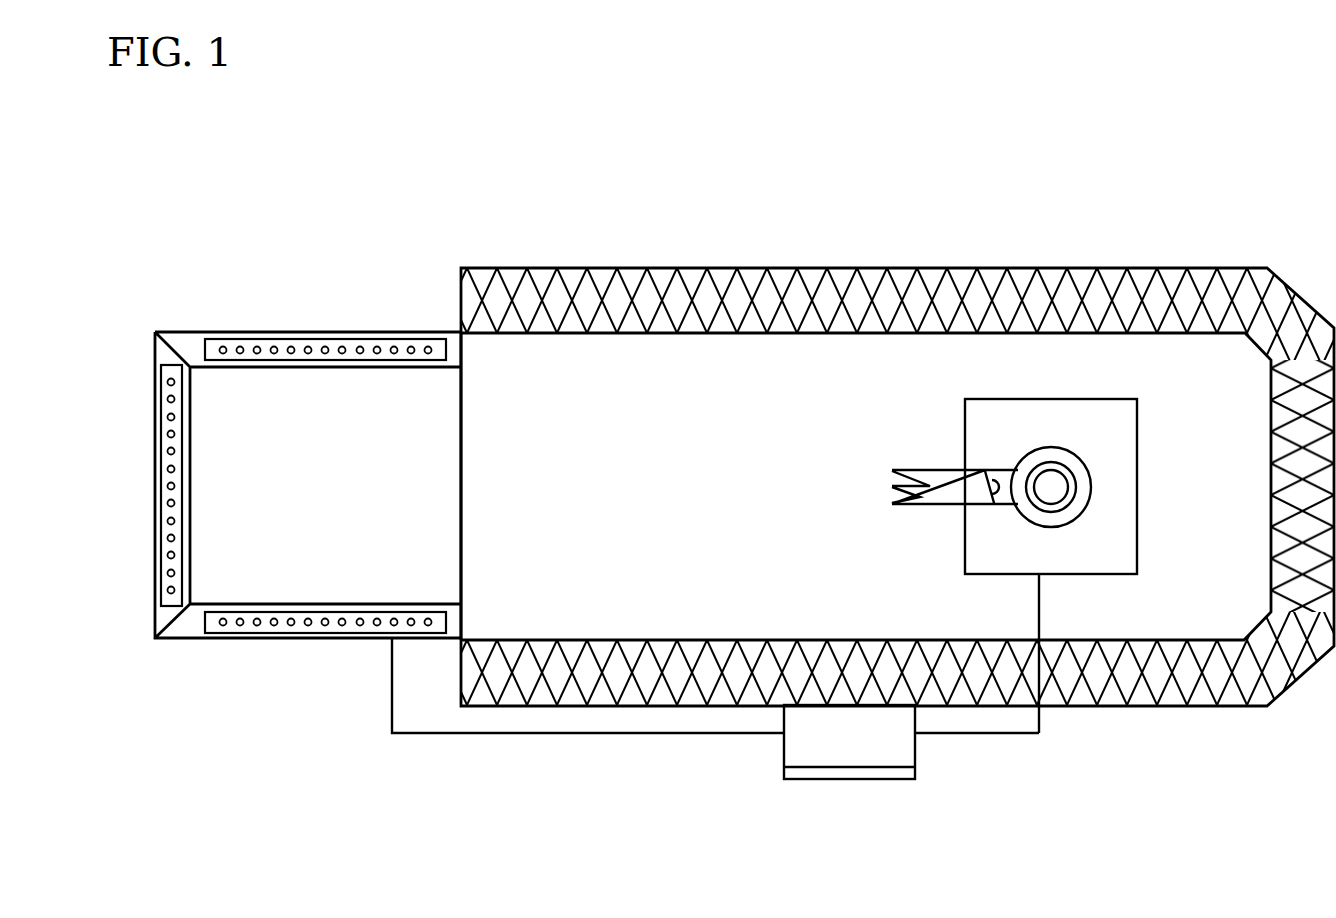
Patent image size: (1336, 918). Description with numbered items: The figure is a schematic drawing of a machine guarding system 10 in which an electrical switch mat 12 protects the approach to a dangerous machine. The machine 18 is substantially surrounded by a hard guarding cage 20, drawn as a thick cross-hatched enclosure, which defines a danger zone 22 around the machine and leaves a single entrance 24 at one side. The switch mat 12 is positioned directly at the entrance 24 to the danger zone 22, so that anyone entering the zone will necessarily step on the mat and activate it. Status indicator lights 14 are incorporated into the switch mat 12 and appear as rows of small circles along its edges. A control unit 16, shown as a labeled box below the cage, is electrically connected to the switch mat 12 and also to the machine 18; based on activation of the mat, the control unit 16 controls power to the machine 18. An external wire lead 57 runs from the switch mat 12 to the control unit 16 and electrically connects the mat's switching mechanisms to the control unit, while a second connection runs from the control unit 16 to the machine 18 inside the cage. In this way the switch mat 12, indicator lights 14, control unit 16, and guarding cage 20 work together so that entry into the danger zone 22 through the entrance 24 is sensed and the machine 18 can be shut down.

The machine guarding system 10 is at (374, 184).
The electrical switch mat 12 is at (159, 332).
The status indicator lights 14 is at (284, 347).
The control unit 16 is at (846, 779).
The machine 18 is at (1138, 486).
The hard guarding cage 20 is at (932, 268).
The danger zone 22 is at (820, 352).
The entrance 24 is at (462, 398).
The external wire lead 57 is at (392, 682).